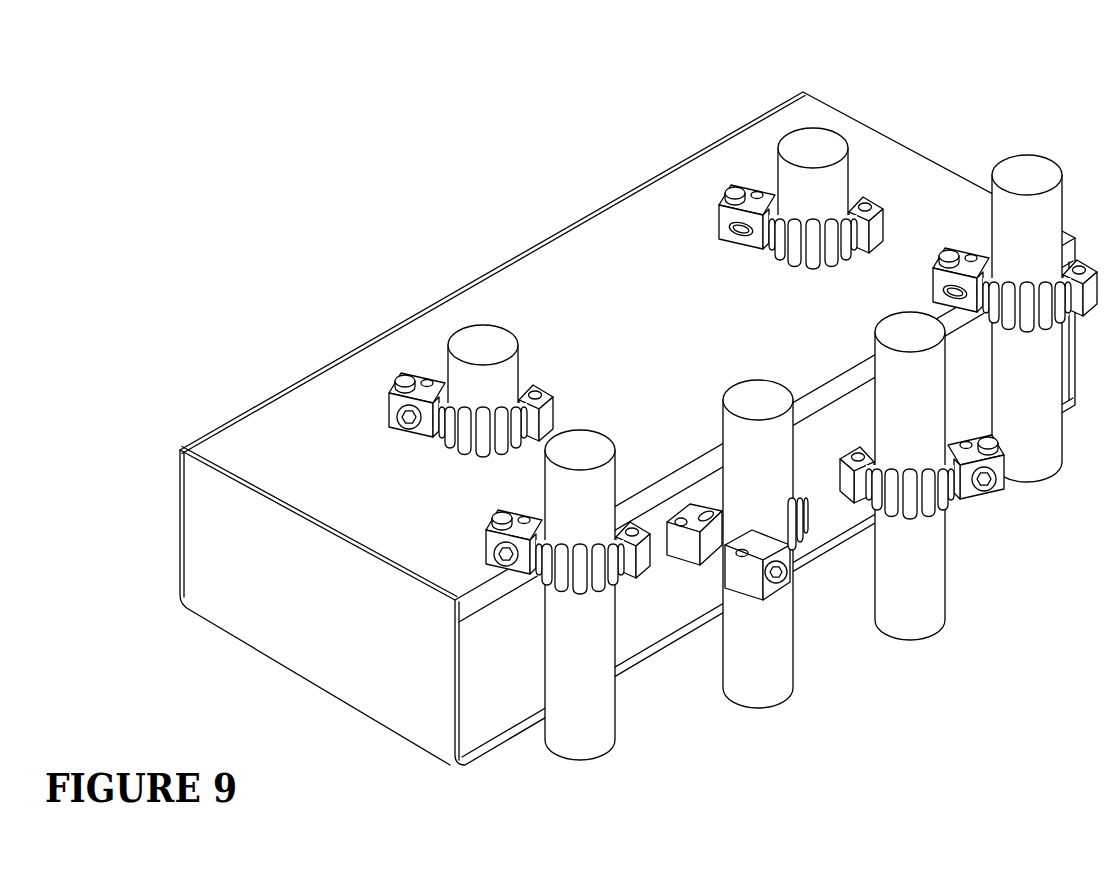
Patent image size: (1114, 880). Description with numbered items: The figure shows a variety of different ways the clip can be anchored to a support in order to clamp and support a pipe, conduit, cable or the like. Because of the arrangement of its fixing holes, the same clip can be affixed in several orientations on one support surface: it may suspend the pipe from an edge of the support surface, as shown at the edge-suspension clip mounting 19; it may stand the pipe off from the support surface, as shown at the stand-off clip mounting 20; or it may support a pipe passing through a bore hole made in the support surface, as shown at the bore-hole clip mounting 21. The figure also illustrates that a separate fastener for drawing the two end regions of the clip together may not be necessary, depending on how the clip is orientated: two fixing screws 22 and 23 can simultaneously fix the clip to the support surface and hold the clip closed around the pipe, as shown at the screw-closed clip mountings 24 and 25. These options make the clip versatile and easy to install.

The edge-suspension clip mounting 19 is at (466, 565).
The stand-off clip mounting 20 is at (690, 497).
The bore-hole clip mounting 21 is at (432, 360).
The fixing screw 22 is at (725, 182).
The fixing screw 23 is at (788, 128).
The screw-closed clip mounting 24 is at (726, 244).
The screw-closed clip mounting 25 is at (952, 240).